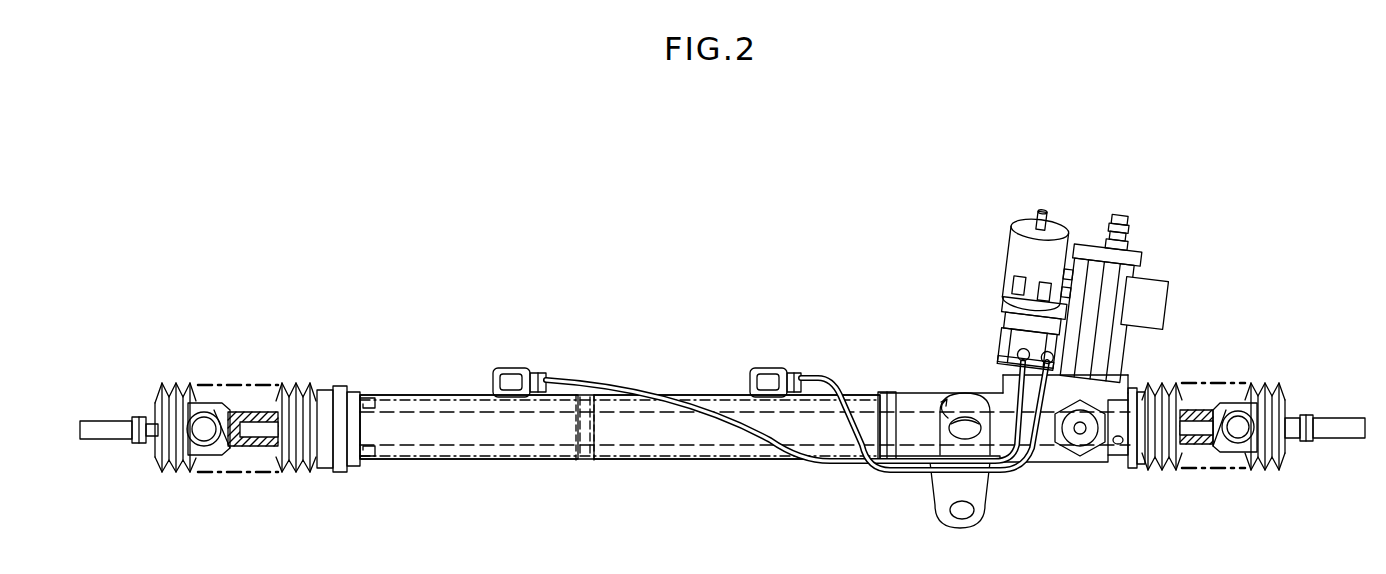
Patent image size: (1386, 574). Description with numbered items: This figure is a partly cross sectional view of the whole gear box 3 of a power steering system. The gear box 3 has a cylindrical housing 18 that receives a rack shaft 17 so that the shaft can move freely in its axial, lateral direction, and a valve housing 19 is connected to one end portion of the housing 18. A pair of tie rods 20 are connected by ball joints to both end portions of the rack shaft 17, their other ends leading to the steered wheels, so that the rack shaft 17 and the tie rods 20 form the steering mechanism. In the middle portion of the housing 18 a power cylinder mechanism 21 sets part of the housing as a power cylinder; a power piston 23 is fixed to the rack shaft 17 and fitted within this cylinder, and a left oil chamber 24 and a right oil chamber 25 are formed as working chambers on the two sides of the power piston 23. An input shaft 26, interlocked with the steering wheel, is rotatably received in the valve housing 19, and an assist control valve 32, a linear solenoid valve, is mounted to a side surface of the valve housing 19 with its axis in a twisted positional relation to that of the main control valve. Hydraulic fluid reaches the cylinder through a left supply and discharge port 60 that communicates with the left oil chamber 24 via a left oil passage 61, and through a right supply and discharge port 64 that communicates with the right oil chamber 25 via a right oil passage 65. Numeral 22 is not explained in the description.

The gear box 3 is at (845, 212).
The rack shaft 17 is at (1134, 470).
The cylindrical housing 18 is at (884, 393).
The valve housing 19 is at (1130, 358).
The tie rod 20 is at (108, 420).
The power cylinder mechanism 21 is at (450, 373).
The cylinder tube 22 is at (645, 462).
The power piston 23 is at (580, 462).
The left oil chamber 24 is at (452, 460).
The right oil chamber 25 is at (725, 457).
The input shaft 26 is at (1130, 226).
The assist control valve 32 is at (1000, 256).
The left supply and discharge port 60 is at (1010, 362).
The left oil passage 61 is at (568, 378).
The right supply and discharge port 64 is at (1016, 354).
The right oil passage 65 is at (804, 377).